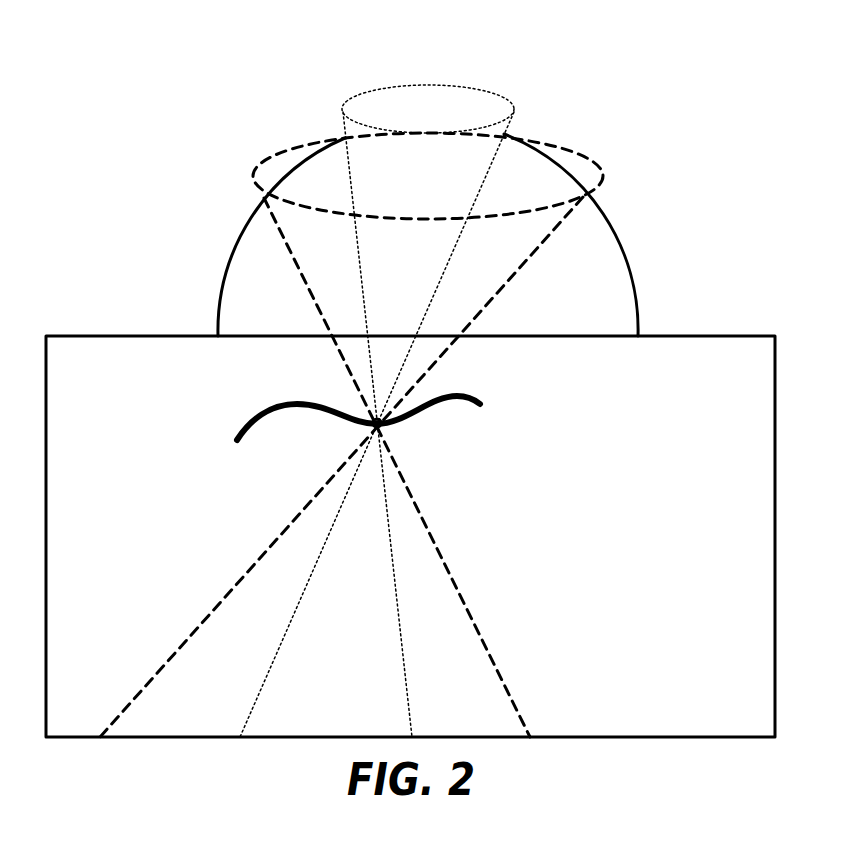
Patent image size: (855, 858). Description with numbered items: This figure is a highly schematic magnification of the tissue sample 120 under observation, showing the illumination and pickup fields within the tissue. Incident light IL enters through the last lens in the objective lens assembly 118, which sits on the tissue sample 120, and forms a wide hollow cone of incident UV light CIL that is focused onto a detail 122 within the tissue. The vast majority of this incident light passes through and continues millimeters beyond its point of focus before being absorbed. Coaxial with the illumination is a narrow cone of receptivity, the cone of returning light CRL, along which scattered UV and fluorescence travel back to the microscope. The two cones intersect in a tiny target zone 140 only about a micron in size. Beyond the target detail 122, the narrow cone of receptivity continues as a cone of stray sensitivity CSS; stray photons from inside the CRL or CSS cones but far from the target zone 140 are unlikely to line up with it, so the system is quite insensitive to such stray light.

The last lens in the objective lens assembly 118 is at (634, 285).
The tissue sample 120 is at (680, 335).
The detail within the tissue sample 122 is at (265, 407).
The target zone 140 is at (387, 412).
The cone of returning light CRL is at (351, 97).
The wide hollow cone of incident UV light CIL is at (545, 140).
The incident light IL is at (552, 238).
The cone of stray sensitivity CSS is at (320, 552).